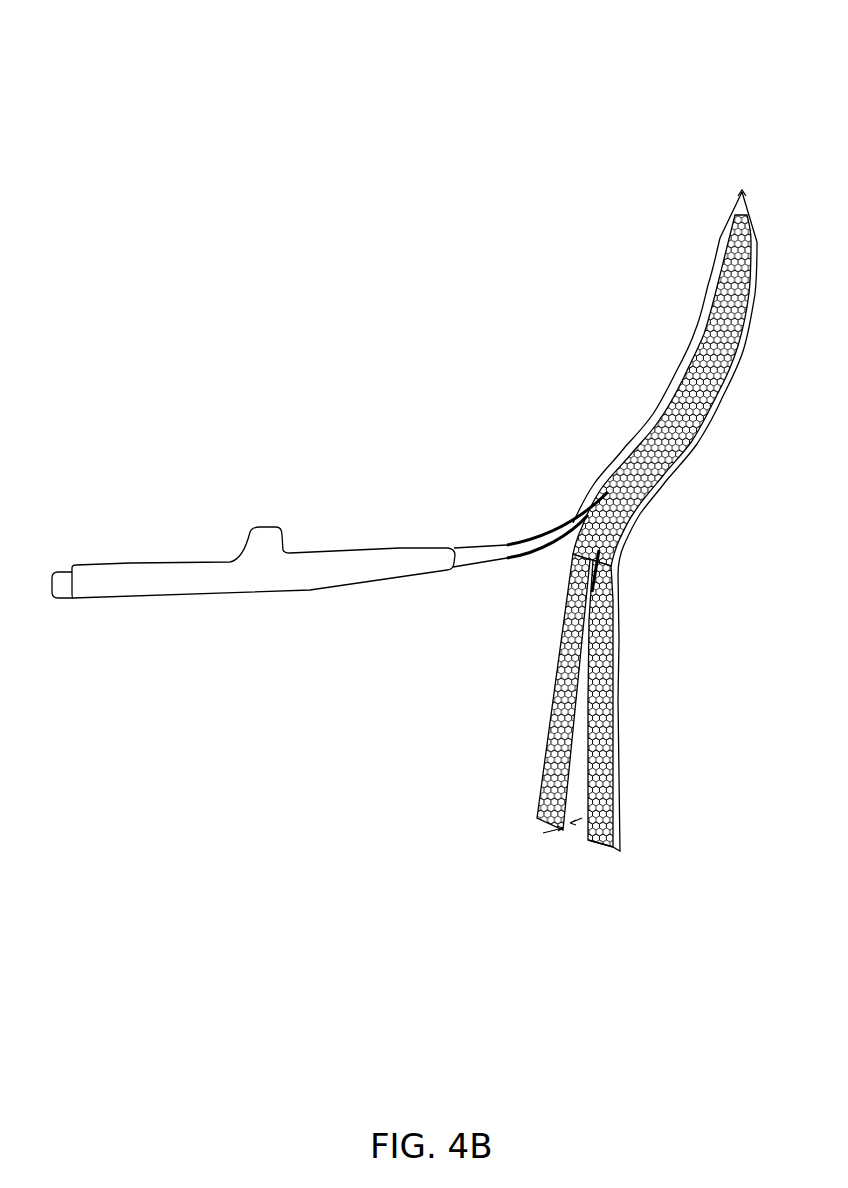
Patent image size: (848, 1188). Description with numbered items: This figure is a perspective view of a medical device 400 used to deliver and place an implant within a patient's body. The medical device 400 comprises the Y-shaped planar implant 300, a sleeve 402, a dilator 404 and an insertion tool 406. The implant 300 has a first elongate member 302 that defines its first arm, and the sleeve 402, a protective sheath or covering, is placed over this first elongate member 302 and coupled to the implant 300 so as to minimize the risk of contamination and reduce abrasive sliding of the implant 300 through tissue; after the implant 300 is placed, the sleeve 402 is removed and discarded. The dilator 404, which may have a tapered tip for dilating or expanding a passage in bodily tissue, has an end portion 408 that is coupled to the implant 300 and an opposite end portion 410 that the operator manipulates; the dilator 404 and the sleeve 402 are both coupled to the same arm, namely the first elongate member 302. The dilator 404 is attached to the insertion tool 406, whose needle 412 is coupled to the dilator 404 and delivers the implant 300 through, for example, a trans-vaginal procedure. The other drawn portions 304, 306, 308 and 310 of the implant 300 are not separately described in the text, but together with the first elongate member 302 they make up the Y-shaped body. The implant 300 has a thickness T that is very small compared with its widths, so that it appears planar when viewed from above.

The medical device 400 is at (100, 115).
The Y-shaped implant 300 is at (623, 553).
The first elongate member 302 is at (720, 317).
The second leg of mesh 304 is at (613, 702).
The first leg of mesh 306 is at (537, 795).
The end of second leg 308 is at (613, 808).
The bend region of mesh 310 is at (627, 465).
The sleeve 402 is at (693, 353).
The dilator 404 is at (540, 530).
The insertion tool 406 is at (130, 563).
The distal end portion of the dilator 408 is at (730, 240).
The proximal end portion of the dilator 410 is at (470, 548).
The needle 412 is at (737, 190).
The thickness T is at (565, 830).